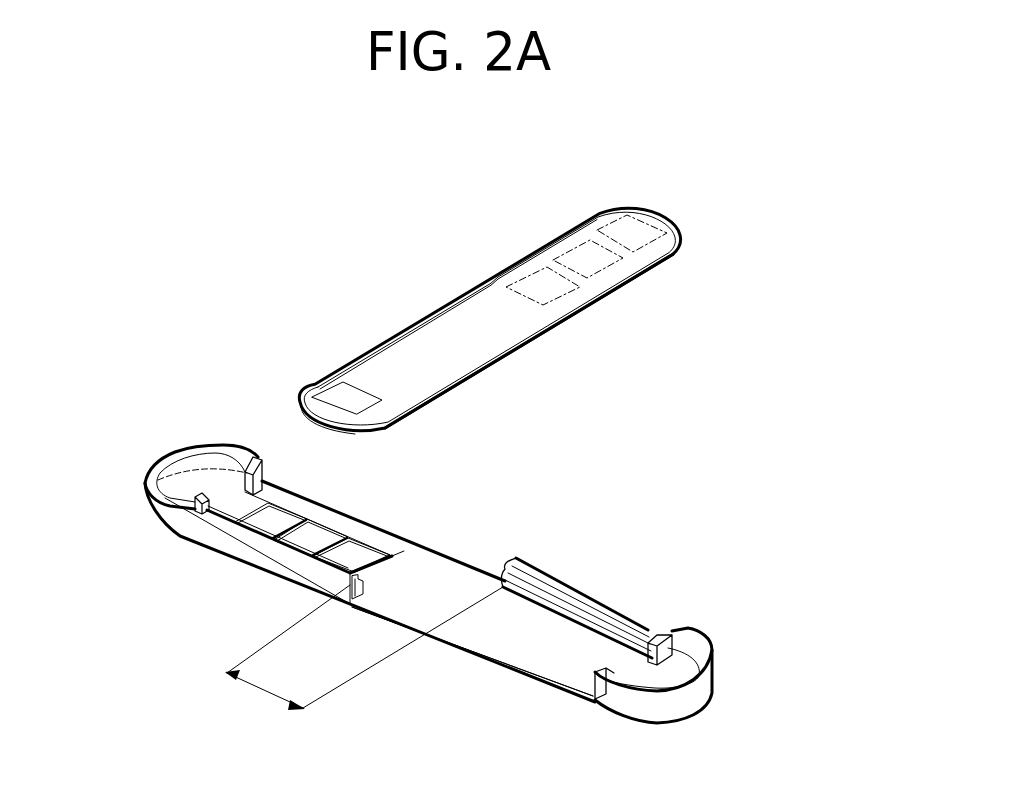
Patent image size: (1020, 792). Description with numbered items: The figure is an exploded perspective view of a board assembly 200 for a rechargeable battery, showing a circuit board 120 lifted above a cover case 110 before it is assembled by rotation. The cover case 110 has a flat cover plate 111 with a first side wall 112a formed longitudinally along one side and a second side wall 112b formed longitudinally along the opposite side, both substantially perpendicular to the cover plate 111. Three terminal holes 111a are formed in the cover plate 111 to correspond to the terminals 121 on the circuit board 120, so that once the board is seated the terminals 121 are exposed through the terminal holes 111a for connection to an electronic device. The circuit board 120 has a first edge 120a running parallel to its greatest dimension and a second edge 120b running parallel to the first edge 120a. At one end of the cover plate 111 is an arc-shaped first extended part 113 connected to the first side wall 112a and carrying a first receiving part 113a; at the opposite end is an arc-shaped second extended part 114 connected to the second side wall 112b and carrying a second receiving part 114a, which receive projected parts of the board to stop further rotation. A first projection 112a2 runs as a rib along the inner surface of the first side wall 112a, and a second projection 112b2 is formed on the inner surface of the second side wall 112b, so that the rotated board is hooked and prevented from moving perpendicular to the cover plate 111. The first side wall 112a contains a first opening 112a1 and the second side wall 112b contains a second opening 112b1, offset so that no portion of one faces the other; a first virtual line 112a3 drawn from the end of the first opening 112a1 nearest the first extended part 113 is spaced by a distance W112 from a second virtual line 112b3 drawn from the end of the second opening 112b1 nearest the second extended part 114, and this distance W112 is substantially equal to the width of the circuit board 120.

The board assembly 200 is at (232, 262).
The circuit board 120 is at (397, 329).
The first edge 120a is at (527, 336).
The second edge 120b is at (481, 284).
The terminals 121 is at (623, 230).
The cover case 110 is at (628, 594).
The cover plate 111 is at (568, 653).
The terminal holes 111a is at (372, 552).
The first side wall 112a is at (570, 582).
The first opening 112a1 is at (413, 528).
The first projection 112a2 is at (513, 565).
The first virtual line 112a3 is at (336, 690).
The second side wall 112b is at (263, 556).
The second opening 112b1 is at (514, 647).
The second projection 112b2 is at (358, 592).
The second virtual line 112b3 is at (253, 660).
The distance W112 is at (263, 697).
The first extended part 113 is at (722, 680).
The first receiving part 113a is at (633, 670).
The second extended part 114 is at (162, 452).
The second receiving part 114a is at (222, 498).